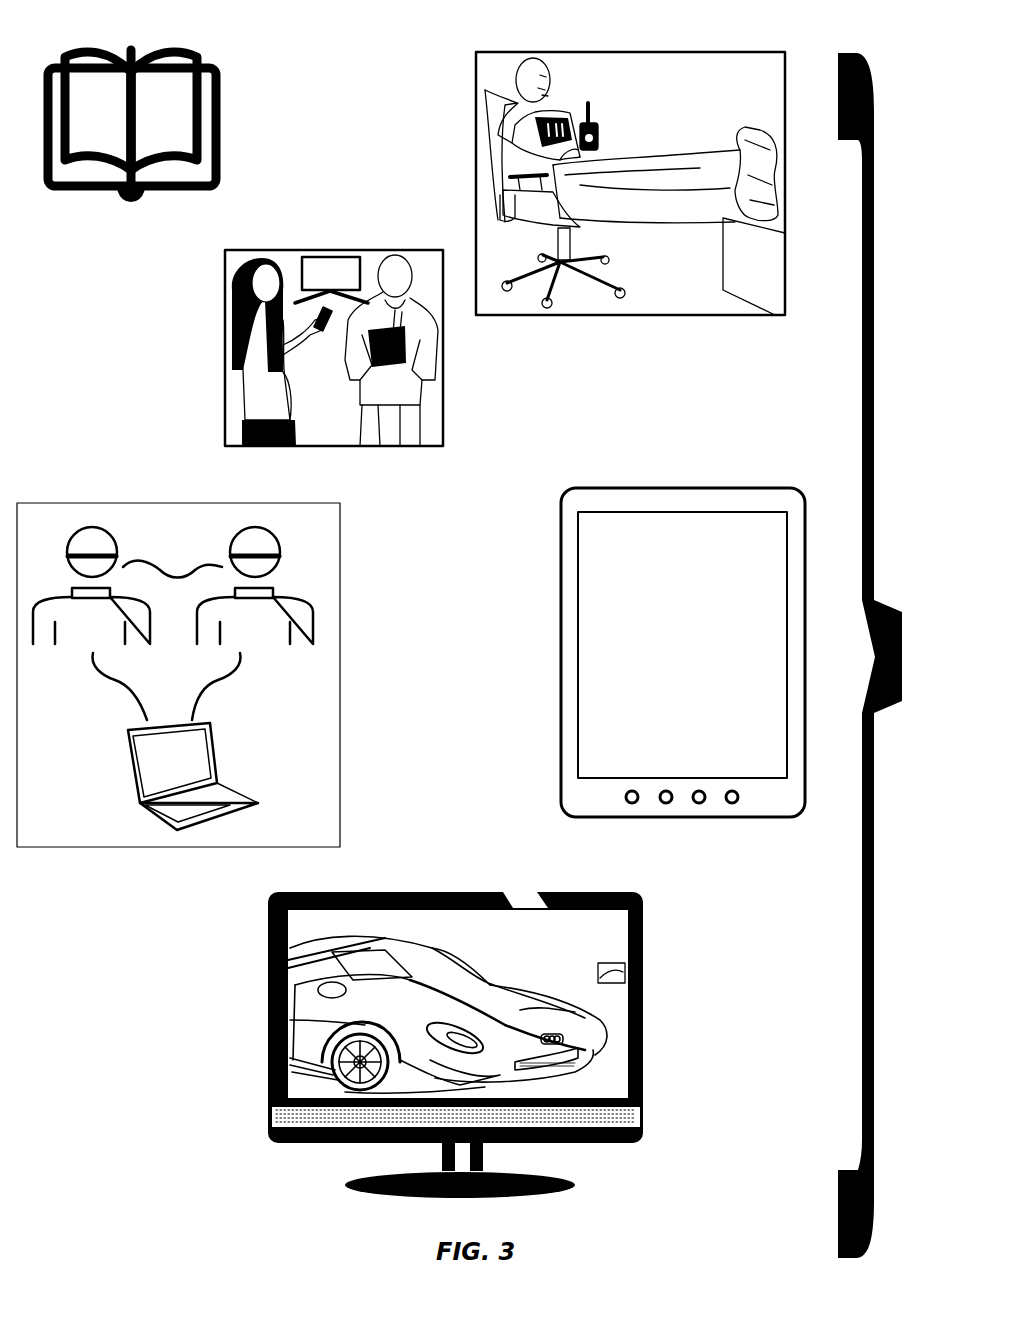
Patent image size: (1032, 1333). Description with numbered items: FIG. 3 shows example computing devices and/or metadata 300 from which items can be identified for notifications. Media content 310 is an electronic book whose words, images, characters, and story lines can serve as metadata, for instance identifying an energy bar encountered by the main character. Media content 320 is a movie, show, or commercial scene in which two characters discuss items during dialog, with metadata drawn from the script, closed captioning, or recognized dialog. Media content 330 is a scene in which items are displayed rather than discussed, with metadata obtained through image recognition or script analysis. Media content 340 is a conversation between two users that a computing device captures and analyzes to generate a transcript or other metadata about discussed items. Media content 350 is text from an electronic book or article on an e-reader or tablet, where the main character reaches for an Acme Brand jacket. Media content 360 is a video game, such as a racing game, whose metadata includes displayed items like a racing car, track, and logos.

The computing devices and/or metadata 300 is at (890, 655).
The media content 310 is at (97, 190).
The media content 320 is at (443, 412).
The media content 330 is at (684, 52).
The media content 340 is at (340, 665).
The media content 350 is at (561, 566).
The media content 360 is at (643, 1022).